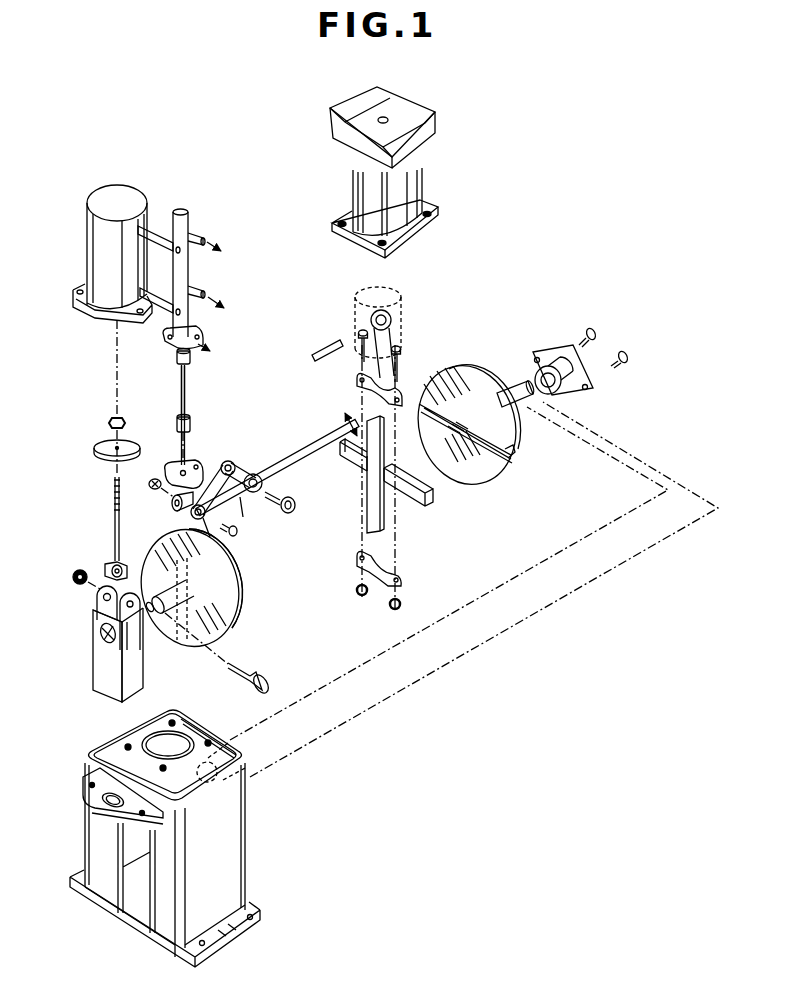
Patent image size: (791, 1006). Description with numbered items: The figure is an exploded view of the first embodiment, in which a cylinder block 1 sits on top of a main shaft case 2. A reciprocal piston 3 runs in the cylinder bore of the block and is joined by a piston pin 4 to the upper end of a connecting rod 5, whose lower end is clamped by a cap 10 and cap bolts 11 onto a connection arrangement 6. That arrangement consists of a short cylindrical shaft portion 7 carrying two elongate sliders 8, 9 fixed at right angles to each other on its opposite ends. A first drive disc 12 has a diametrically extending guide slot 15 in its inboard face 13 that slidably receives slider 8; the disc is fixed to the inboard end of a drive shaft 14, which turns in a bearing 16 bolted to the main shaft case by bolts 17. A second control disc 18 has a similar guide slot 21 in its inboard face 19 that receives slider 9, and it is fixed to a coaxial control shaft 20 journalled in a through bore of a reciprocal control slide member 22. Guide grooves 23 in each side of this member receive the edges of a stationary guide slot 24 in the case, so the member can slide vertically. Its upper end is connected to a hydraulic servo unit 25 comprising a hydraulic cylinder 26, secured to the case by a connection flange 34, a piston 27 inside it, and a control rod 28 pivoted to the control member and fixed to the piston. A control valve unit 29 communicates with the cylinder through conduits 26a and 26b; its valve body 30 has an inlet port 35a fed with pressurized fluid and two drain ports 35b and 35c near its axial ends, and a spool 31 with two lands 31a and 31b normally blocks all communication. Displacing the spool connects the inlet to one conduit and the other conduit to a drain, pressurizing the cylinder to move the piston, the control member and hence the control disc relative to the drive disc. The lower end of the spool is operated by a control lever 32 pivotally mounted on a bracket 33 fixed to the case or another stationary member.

The cylinder block 1 is at (421, 193).
The main shaft case 2 is at (247, 838).
The piston 3 is at (405, 313).
The piston pin 4 is at (328, 351).
The connecting rod 5 is at (390, 328).
The connection arrangement 6 is at (358, 479).
The cylindrical shaft portion 7 is at (400, 480).
The slider 8 is at (426, 502).
The slider 9 is at (368, 520).
The cap 10 is at (401, 576).
The cap bolts 11 is at (357, 342).
The first drive disc 12 is at (512, 438).
The inboard face 13 is at (478, 478).
The drive shaft 14 is at (507, 398).
The guide slot 15 is at (502, 470).
The bearing 16 is at (570, 390).
The bolts 17 is at (619, 352).
The second control disc 18 is at (227, 605).
The inboard face 19 is at (228, 567).
The control shaft 20 is at (170, 627).
The guide slot 21 is at (183, 528).
The control slide member 22 is at (105, 663).
The guide grooves 23 is at (142, 650).
The stationary guide slot 24 is at (132, 882).
The hydraulic servo unit 25 is at (52, 373).
The hydraulic cylinder 26 is at (103, 308).
The conduit 26a is at (158, 232).
The conduit 26b is at (160, 313).
The piston 27 is at (103, 440).
The control rod 28 is at (113, 515).
The control valve unit 29 is at (252, 312).
The valve body 30 is at (193, 318).
The spool 31 is at (203, 337).
The land 31a is at (178, 368).
The land 31b is at (191, 425).
The control lever 32 is at (292, 455).
The bracket 33 is at (243, 507).
The connection flange 34 is at (92, 795).
The inlet port 35a is at (199, 285).
The drain port 35b is at (197, 232).
The drain port 35c is at (230, 377).